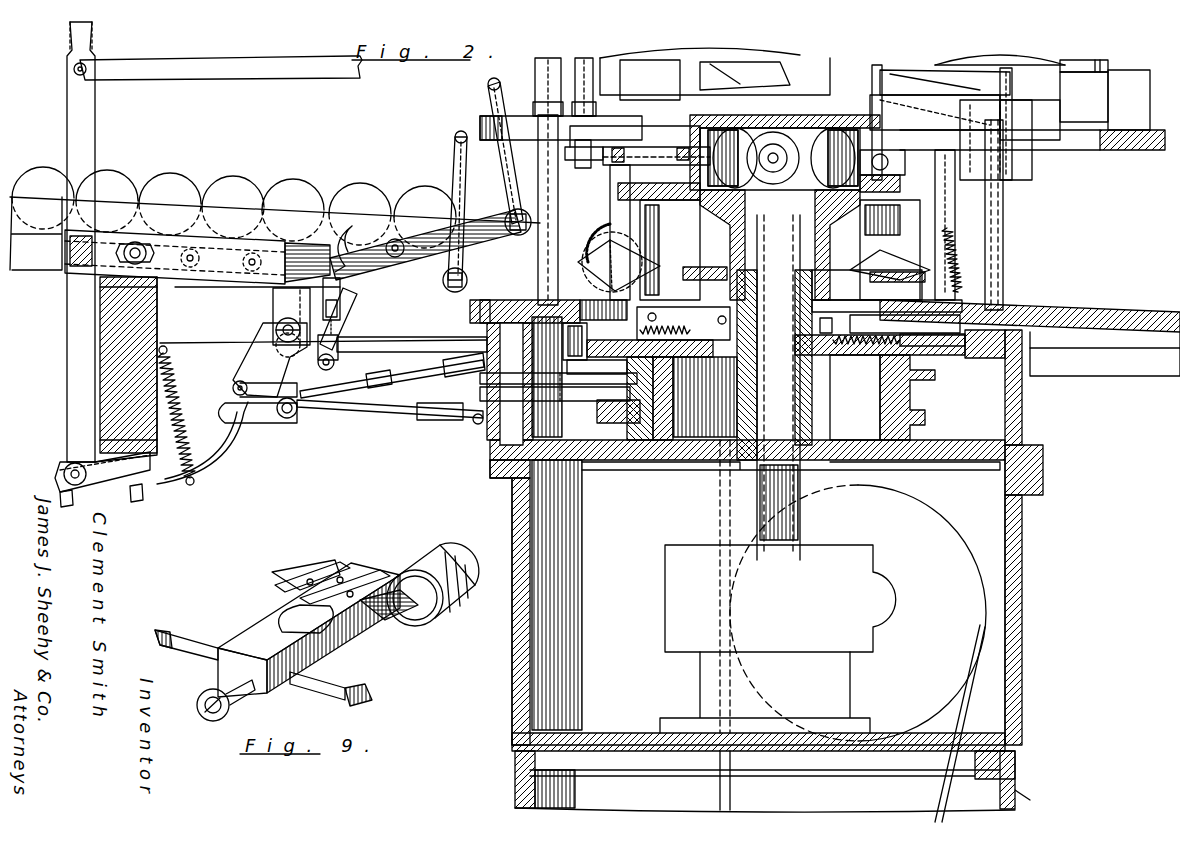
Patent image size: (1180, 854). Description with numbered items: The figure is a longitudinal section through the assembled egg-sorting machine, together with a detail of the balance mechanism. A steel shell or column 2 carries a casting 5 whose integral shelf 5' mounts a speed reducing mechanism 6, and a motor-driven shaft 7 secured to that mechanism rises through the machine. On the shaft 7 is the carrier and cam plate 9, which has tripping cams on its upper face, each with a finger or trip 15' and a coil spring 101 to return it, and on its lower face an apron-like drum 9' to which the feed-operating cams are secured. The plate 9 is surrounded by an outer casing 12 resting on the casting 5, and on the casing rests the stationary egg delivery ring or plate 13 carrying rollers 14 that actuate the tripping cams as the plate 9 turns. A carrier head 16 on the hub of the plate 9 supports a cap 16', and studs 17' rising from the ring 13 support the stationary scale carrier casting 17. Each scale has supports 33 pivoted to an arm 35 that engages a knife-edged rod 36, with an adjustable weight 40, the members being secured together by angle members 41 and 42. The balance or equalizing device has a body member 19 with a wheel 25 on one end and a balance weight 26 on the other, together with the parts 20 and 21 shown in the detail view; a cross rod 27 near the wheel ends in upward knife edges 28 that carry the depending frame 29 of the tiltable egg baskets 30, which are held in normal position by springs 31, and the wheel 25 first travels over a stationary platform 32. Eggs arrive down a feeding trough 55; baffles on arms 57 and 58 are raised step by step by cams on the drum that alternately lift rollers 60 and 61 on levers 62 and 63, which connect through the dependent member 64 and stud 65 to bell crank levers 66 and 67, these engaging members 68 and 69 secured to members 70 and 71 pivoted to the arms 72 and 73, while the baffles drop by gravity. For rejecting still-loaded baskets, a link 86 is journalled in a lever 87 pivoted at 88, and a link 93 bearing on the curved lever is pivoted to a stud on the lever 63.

In FIG. 2, the steel shell or column 2 is at (1016, 800).
In FIG. 2, the casting 5 is at (772, 605).
In FIG. 2, the integral shelf 5' is at (765, 723).
In FIG. 2, the speed reducing mechanism 6 is at (778, 586).
In FIG. 2, the shaft 7 is at (778, 387).
In FIG. 2, the carrier and cam plate 9 is at (747, 365).
In FIG. 2, the apron-like drum 9' is at (855, 397).
In FIG. 2, the outer casing 12 is at (1022, 428).
In FIG. 2, the egg delivery ring or plate 13 is at (1065, 320).
In FIG. 2, the rollers 14 is at (968, 346).
In FIG. 2, the finger or trip 15' is at (890, 321).
In FIG. 2, the carrier head 16 is at (769, 225).
In FIG. 2, the cap 16' is at (926, 122).
In FIG. 2, the scale carrier casting 17 is at (1032, 158).
In FIG. 2, the studs 17' is at (794, 212).
In FIG. 2, the body member 19 is at (640, 148).
In FIG. 9, the body member 19 is at (258, 632).
In FIG. 9, the clamp strap 20 is at (312, 578).
In FIG. 9, the clamp plate 21 is at (275, 583).
In FIG. 2, the wheel 25 is at (561, 99).
In FIG. 9, the wheel 25 is at (212, 719).
In FIG. 2, the balance weight 26 is at (822, 182).
In FIG. 9, the balance weight 26 is at (445, 555).
In FIG. 2, the cross rod 27 is at (619, 148).
In FIG. 9, the cross rod 27 is at (338, 684).
In FIG. 9, the knife edges 28 is at (172, 628).
In FIG. 2, the depending frame 29 is at (614, 214).
In FIG. 2, the egg carrying baskets 30 is at (606, 272).
In FIG. 2, the springs 31 is at (955, 248).
In FIG. 2, the stationary platform 32 is at (596, 220).
In FIG. 2, the supports 33 is at (935, 105).
In FIG. 2, the arm 35 is at (805, 74).
In FIG. 2, the rod 36 is at (1138, 110).
In FIG. 2, the adjustable weight 40 is at (1112, 67).
In FIG. 2, the angle member 41 is at (1020, 64).
In FIG. 2, the angle member 42 is at (1022, 164).
In FIG. 2, the feeding trough 55 is at (227, 219).
In FIG. 2, the arm 57 is at (456, 170).
In FIG. 2, the arm 58 is at (498, 84).
In FIG. 2, the roller 60 is at (612, 412).
In FIG. 2, the roller 61 is at (558, 378).
In FIG. 2, the lever 62 is at (566, 404).
In FIG. 2, the lever 63 is at (480, 360).
In FIG. 2, the dependent member 64 is at (272, 309).
In FIG. 2, the stud 65 is at (276, 330).
In FIG. 2, the bell crank lever 66 is at (252, 369).
In FIG. 2, the bell crank lever 67 is at (380, 336).
In FIG. 2, the member 68 is at (376, 363).
In FIG. 2, the member 69 is at (382, 414).
In FIG. 2, the member 70 is at (348, 237).
In FIG. 2, the member 71 is at (322, 296).
In FIG. 2, the arm 72 is at (402, 257).
In FIG. 2, the arm 73 is at (480, 240).
In FIG. 2, the link 86 is at (236, 66).
In FIG. 2, the lever 87 is at (85, 149).
In FIG. 2, the pivot 88 is at (62, 472).
In FIG. 2, the link 93 is at (260, 415).
In FIG. 2, the coil spring 101 is at (866, 352).